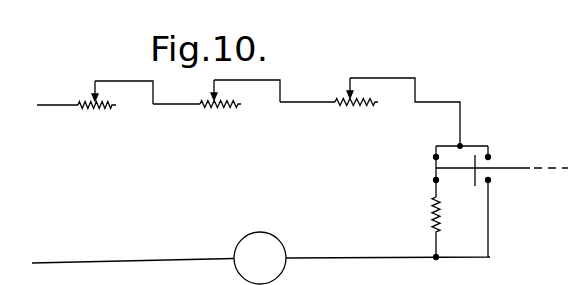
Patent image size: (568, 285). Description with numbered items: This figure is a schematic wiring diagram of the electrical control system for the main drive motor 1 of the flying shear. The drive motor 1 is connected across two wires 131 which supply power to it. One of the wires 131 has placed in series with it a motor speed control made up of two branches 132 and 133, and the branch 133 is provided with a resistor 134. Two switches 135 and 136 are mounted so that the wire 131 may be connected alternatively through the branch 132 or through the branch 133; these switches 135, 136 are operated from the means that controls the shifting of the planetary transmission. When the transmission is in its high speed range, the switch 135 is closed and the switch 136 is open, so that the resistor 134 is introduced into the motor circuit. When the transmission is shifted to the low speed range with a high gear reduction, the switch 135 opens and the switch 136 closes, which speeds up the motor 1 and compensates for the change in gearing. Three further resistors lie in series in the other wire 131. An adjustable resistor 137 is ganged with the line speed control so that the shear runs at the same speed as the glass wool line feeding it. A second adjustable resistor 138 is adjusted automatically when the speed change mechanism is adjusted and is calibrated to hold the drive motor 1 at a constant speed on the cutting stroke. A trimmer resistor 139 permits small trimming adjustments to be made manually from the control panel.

The drive motor 1 is at (267, 233).
The wires 131 is at (48, 106).
The branch 132 is at (491, 157).
The branch 133 is at (434, 157).
The resistor 134 is at (432, 202).
The switch 135 is at (436, 168).
The switch 136 is at (472, 186).
The adjustable resistor 137 is at (348, 106).
The adjustable resistor 138 is at (220, 108).
The trimmer resistor 139 is at (100, 108).